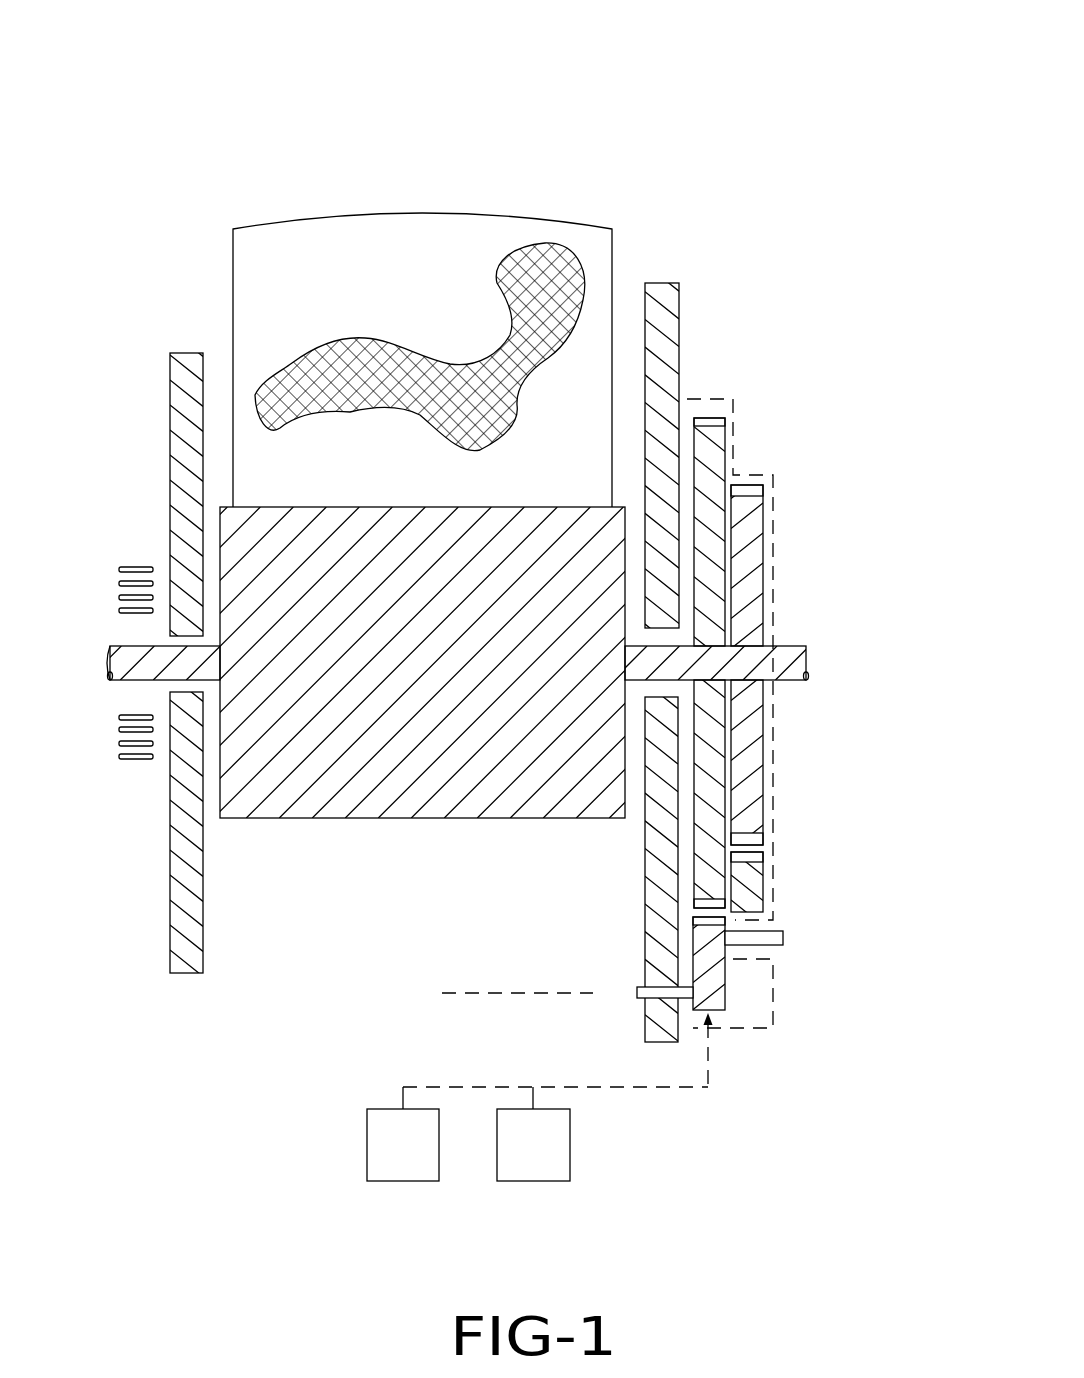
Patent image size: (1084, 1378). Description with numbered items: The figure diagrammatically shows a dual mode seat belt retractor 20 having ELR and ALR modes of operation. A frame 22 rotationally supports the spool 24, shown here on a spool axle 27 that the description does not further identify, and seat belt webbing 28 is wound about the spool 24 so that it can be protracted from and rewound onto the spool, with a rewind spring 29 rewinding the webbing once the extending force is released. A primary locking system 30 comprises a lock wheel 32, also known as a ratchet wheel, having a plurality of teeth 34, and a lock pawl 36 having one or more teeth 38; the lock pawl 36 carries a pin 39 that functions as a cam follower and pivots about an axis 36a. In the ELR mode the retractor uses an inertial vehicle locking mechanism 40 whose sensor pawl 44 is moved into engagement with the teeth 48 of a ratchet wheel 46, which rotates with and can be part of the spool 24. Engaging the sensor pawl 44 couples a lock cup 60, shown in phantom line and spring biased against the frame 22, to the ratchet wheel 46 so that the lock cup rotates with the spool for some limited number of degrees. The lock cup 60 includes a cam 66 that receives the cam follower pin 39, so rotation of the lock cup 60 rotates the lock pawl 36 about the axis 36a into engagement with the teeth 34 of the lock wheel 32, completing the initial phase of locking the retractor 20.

The seat belt retractor 20 is at (236, 107).
The frame 22 is at (670, 307).
The spool 24 is at (407, 800).
The shaft 27 is at (790, 670).
The seat belt webbing 28 is at (407, 228).
The rewind spring 29 is at (120, 569).
The primary locking system 30 is at (736, 605).
The lock wheel 32 is at (736, 432).
The teeth 34 is at (710, 417).
The lock pawl 36 is at (729, 1003).
The axis 36a is at (527, 995).
The teeth 38 is at (710, 922).
The pin 39 is at (777, 938).
The vehicle locking mechanism 40 is at (573, 1167).
The sensor pawl 44 is at (742, 890).
The ratchet wheel 46 is at (771, 524).
The teeth 48 is at (740, 838).
The lock cup 60 is at (779, 742).
The cam 66 is at (763, 948).